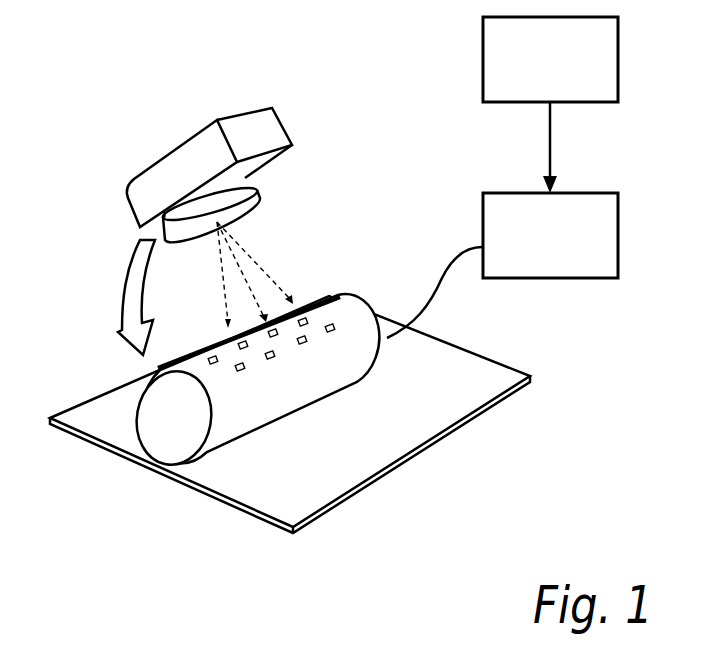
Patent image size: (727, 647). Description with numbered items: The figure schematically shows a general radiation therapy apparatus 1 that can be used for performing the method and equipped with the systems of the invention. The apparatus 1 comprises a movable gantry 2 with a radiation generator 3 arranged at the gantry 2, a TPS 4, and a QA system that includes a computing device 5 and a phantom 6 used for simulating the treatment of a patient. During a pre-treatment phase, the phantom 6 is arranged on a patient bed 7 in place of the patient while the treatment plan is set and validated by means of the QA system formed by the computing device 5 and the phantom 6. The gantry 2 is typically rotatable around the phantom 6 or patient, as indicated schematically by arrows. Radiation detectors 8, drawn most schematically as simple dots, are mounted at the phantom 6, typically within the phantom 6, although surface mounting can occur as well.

The radiation therapy apparatus 1 is at (213, 185).
The movable gantry 2 is at (242, 127).
The radiation generator 3 is at (238, 208).
The TPS 4 is at (603, 52).
The computing device 5 is at (605, 237).
The phantom 6 is at (330, 373).
The patient bed 7 is at (98, 408).
The radiation detectors 8 is at (331, 326).